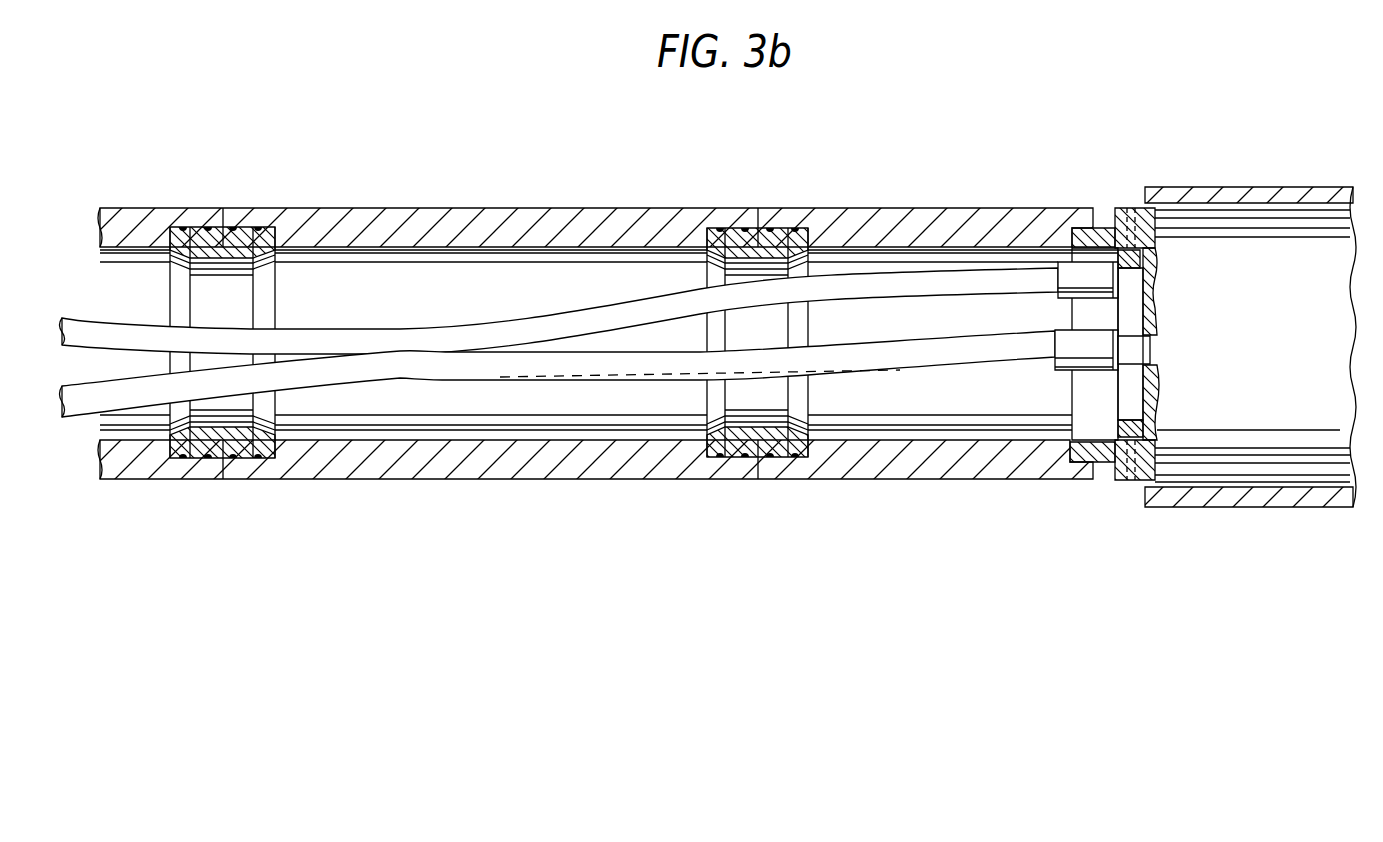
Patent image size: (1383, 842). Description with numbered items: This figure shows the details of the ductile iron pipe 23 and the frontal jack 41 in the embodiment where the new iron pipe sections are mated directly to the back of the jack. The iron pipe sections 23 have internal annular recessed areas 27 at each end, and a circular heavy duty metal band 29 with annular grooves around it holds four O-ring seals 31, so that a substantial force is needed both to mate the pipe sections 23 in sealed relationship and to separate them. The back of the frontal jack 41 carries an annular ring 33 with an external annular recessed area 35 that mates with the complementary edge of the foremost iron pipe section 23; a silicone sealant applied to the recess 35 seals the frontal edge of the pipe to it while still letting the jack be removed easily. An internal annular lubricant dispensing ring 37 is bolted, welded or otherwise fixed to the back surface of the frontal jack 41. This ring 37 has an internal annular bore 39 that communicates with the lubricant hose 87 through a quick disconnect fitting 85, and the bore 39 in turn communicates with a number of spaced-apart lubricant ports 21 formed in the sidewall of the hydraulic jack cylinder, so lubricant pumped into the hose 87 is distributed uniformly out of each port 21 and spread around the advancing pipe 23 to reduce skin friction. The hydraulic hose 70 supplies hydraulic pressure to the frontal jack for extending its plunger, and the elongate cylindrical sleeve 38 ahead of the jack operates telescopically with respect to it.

The lubricant port 21 is at (1128, 208).
The ductile iron pipe section 23 is at (463, 208).
The internal annular recessed area 27 is at (716, 246).
The circular heavy duty metal band 29 is at (798, 388).
The O-ring seal 31 is at (744, 228).
The annular ring 33 is at (1082, 232).
The external annular recessed area 35 is at (1097, 213).
The internal annular lubricant dispensing ring 37 is at (1125, 427).
The elongate cylindrical sleeve 38 is at (1208, 186).
The internal annular bore 39 is at (1160, 253).
The frontal jack 41 is at (1268, 252).
The hydraulic hose 70 is at (887, 368).
The quick disconnect fitting 85 is at (1058, 303).
The lubricant hose 87 is at (860, 297).